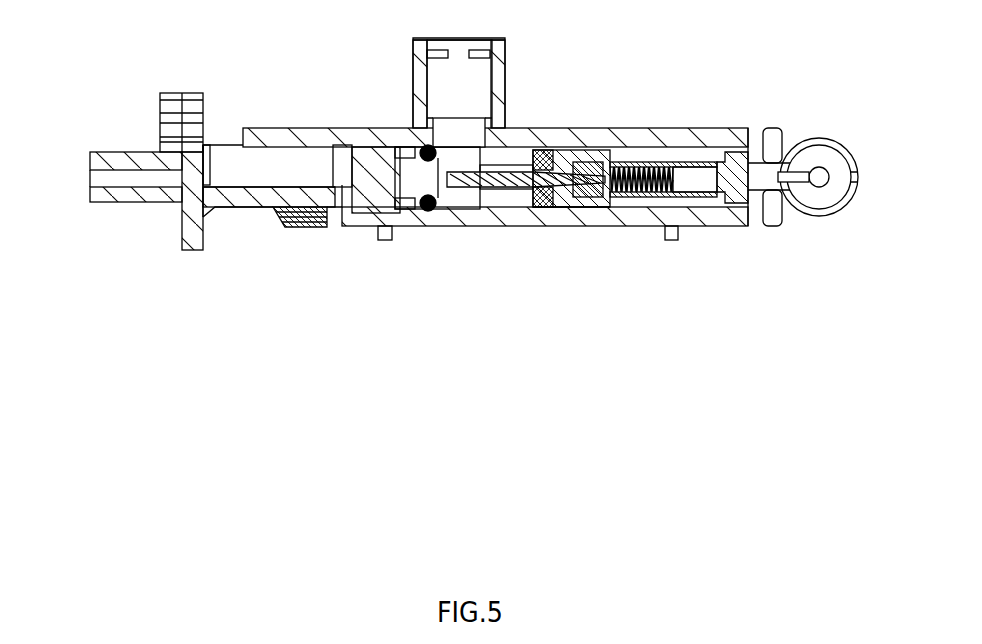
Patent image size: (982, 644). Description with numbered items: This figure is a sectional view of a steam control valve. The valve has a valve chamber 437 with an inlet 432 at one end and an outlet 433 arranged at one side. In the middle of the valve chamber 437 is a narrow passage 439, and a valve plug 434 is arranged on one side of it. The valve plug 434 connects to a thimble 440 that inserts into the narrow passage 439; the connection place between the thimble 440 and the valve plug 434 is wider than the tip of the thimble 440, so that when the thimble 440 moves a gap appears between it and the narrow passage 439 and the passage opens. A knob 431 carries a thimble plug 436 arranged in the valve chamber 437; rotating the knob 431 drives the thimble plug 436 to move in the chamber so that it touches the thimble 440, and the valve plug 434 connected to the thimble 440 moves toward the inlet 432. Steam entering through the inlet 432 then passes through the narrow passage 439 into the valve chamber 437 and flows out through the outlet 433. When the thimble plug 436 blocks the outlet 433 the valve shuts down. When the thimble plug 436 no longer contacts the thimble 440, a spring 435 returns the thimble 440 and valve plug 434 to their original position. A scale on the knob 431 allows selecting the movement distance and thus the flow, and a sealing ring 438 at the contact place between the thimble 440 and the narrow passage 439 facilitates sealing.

The knob 431 is at (131, 177).
The inlet 432 is at (733, 180).
The outlet 433 is at (455, 58).
The valve plug 434 is at (572, 205).
The spring 435 is at (636, 190).
The thimble plug 436 is at (378, 173).
The valve chamber 437 is at (510, 208).
The sealing ring 438 is at (558, 148).
The narrow passage 439 is at (505, 165).
The thimble 440 is at (473, 178).